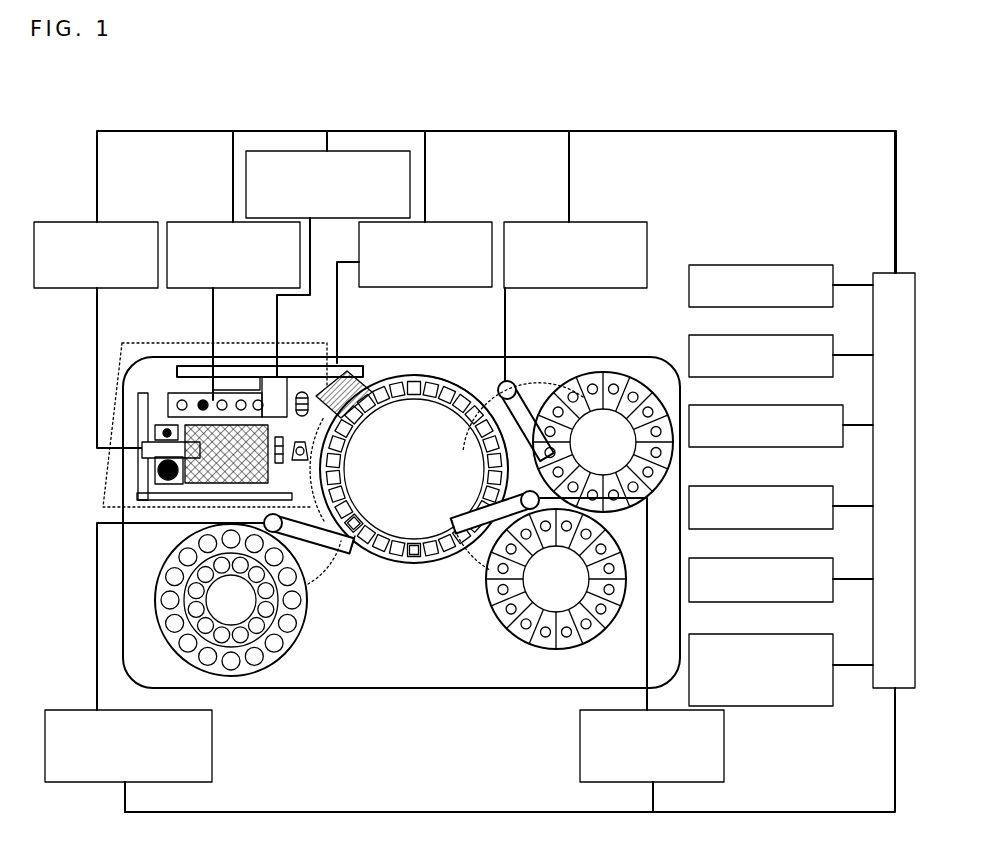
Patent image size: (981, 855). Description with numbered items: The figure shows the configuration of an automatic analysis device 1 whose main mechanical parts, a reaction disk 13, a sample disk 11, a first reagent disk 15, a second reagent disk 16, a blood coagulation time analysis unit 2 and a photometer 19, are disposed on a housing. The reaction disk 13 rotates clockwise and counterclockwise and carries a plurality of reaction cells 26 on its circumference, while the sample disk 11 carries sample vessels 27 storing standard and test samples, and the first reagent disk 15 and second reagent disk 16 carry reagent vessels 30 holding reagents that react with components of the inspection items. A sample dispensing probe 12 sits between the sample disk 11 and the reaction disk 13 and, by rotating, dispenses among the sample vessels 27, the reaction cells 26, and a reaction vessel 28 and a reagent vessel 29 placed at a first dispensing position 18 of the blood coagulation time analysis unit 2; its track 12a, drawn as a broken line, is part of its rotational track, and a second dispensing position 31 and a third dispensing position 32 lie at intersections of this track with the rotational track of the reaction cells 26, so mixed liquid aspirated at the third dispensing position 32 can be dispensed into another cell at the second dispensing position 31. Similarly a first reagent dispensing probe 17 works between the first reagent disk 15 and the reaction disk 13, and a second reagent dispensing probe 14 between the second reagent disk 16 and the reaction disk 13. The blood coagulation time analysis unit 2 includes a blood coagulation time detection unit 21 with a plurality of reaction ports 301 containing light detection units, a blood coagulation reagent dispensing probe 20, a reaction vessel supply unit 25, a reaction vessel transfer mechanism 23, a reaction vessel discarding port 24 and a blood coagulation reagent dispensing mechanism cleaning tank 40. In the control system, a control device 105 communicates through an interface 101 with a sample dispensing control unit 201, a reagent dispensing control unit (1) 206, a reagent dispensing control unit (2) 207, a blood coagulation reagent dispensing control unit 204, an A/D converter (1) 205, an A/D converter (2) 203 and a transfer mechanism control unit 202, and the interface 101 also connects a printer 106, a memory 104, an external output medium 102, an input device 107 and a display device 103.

The automatic analysis device 1 is at (111, 89).
The blood coagulation time analysis unit 2 is at (190, 367).
The sample disk 11 is at (218, 673).
The sample dispensing probe 12 is at (303, 546).
The track 12a is at (352, 550).
The reaction disk 13 is at (405, 565).
The second reagent dispensing probe 14 is at (472, 523).
The first reagent disk 15 is at (645, 385).
The second reagent disk 16 is at (522, 637).
The first reagent dispensing probe 17 is at (516, 388).
The first dispensing position 18 is at (284, 464).
The photometer 19 is at (358, 363).
The blood coagulation reagent dispensing probe 20 is at (156, 353).
The blood coagulation time detection unit 21 is at (138, 400).
The reaction vessel transfer mechanism 23 is at (160, 450).
The reaction vessel discarding port 24 is at (137, 497).
The reaction vessel supply unit 25 is at (193, 485).
The reaction cell 26 is at (440, 376).
The sample vessel 27 is at (280, 645).
The reaction vessel 28 is at (206, 400).
The reagent vessel 29 is at (336, 450).
The reagent vessel 30 is at (611, 384).
The second dispensing position 31 is at (334, 470).
The third dispensing position 32 is at (353, 513).
The blood coagulation reagent dispensing mechanism cleaning tank 40 is at (300, 392).
The reaction port 301 is at (173, 400).
The interface 101 is at (882, 690).
The external output medium 102 is at (769, 634).
The display device 103 is at (779, 558).
The memory 104 is at (778, 486).
The control device 105 is at (780, 405).
The printer 106 is at (770, 335).
The input device 107 is at (770, 265).
The sample dispensing control unit 201 is at (212, 745).
The transfer mechanism control unit 202 is at (53, 221).
The A/D converter (2) 203 is at (193, 221).
The blood coagulation reagent dispensing control unit 204 is at (358, 151).
The A/D converter (1) 205 is at (438, 222).
The reagent dispensing control unit (1) 206 is at (640, 222).
The reagent dispensing control unit (2) 207 is at (580, 728).